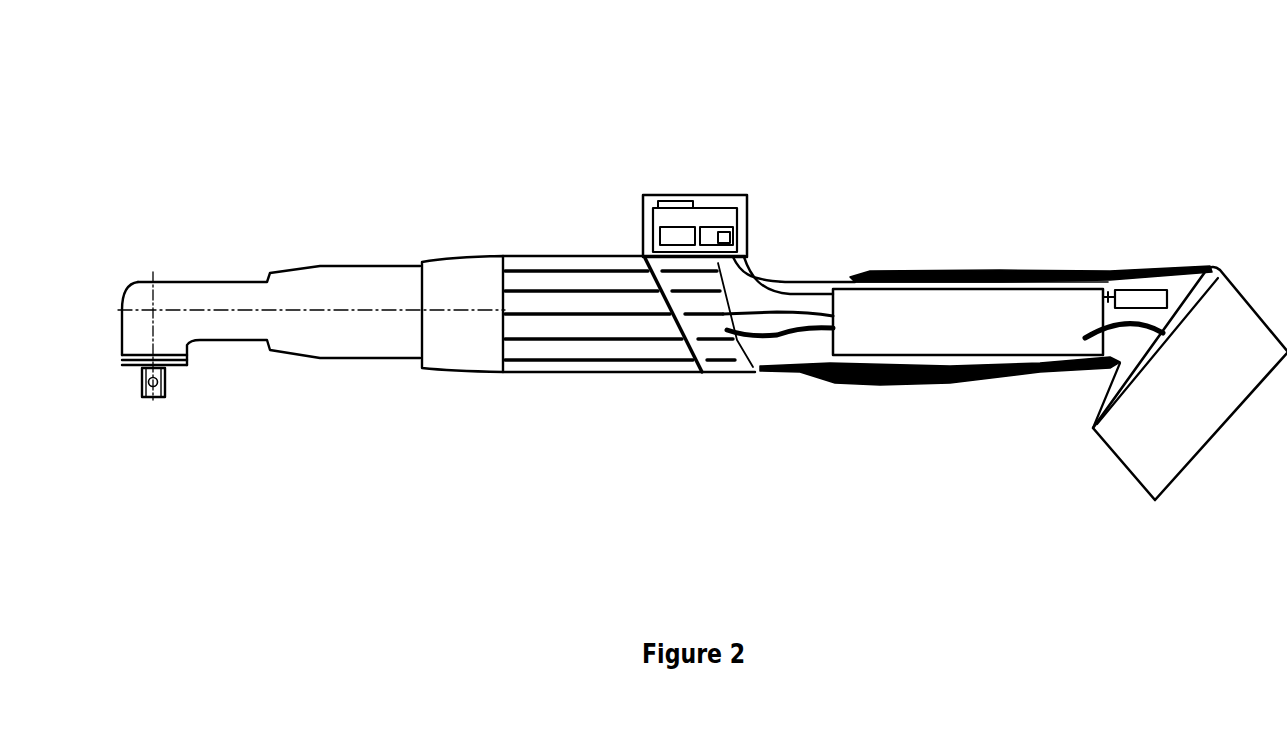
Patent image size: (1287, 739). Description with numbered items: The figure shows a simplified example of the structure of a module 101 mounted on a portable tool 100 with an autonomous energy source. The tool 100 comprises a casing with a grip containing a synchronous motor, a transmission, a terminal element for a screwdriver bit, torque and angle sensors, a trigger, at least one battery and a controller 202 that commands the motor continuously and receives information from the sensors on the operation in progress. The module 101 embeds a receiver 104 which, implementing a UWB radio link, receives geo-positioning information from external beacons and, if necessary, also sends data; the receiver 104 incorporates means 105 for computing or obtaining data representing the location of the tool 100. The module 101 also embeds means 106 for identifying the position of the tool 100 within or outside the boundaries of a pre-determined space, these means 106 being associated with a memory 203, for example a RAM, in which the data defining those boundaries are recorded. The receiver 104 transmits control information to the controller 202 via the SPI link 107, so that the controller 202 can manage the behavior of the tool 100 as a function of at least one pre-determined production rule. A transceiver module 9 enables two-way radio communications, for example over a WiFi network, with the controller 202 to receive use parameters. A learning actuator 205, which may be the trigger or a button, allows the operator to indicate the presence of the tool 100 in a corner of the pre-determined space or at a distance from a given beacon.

The portable tool 100 is at (285, 103).
The module 101 is at (700, 195).
The receiver 104 is at (663, 215).
The means for computing or obtaining data representing the geo-positioning of the to 105 is at (658, 232).
The means for identifying the position of the tool 106 is at (710, 226).
The memory 203 is at (730, 235).
The SPI link 107 is at (755, 288).
The controller 202 is at (917, 318).
The transceiver module 9 is at (1137, 297).
The learning actuator 205 is at (887, 385).